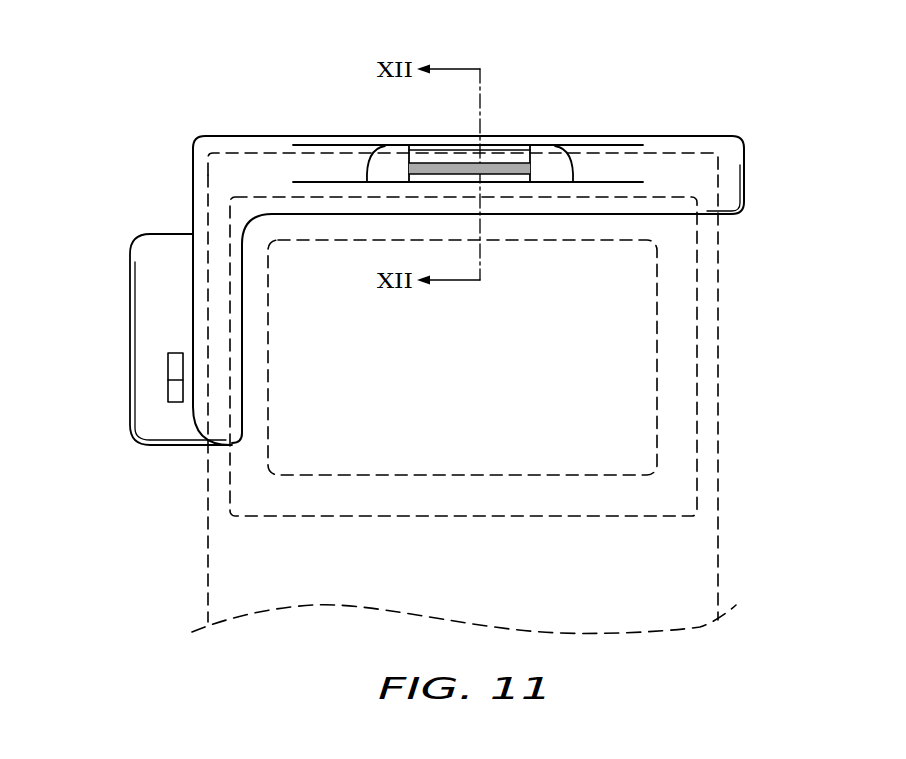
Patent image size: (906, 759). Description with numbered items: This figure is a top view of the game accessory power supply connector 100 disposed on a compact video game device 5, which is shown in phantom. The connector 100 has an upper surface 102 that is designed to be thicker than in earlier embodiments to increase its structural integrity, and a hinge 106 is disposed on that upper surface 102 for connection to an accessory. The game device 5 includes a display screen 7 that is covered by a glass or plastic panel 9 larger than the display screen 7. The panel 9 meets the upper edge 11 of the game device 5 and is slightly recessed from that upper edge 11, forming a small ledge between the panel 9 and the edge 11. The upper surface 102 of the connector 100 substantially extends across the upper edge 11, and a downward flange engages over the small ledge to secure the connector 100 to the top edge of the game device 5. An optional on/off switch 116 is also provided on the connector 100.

The game accessory power supply connector 100 is at (206, 76).
The upper surface 102 is at (680, 162).
The hinge 106 is at (513, 163).
The on/off switch 116 is at (172, 390).
The upper edge 11 is at (695, 170).
The panel 9 is at (672, 250).
The display screen 7 is at (630, 432).
The game device 5 is at (683, 558).